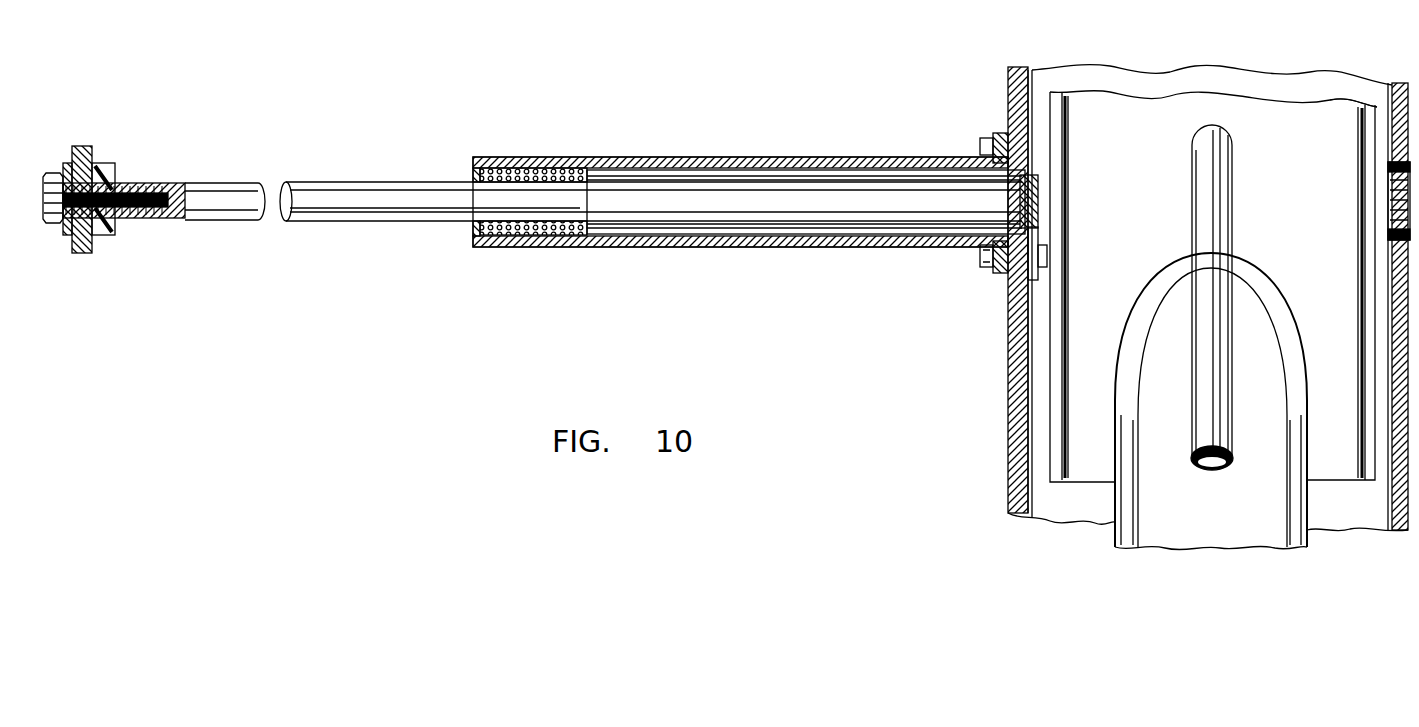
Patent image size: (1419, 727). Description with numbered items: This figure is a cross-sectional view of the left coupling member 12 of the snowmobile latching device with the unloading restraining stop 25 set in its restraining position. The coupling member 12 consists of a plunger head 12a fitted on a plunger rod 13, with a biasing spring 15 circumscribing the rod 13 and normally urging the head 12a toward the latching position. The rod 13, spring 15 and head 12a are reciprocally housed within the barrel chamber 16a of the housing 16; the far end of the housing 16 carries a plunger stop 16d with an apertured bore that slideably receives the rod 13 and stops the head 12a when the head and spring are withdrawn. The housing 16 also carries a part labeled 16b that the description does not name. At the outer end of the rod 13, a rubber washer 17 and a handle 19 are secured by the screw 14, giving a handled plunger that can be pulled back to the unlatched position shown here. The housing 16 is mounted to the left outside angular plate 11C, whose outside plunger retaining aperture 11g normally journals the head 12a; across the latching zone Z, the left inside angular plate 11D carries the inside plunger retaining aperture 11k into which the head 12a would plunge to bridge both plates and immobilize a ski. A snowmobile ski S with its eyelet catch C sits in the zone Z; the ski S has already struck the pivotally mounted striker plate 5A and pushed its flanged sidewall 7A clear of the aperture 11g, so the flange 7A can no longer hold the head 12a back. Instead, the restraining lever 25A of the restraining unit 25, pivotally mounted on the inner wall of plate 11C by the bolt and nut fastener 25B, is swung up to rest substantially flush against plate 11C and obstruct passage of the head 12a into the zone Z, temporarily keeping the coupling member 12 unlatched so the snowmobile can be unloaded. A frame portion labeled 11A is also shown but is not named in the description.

The fastener screw 14 is at (52, 223).
The handle 19 is at (82, 146).
The rubber washer 17 is at (100, 168).
The plunger rod 13 is at (248, 182).
The biasing spring 15 is at (521, 158).
The coupling member 12 is at (605, 157).
The housing 16 is at (667, 157).
The barrel chamber 16a is at (705, 247).
The plunger stop 16d is at (473, 225).
The tube flange 16b is at (1002, 135).
The plunger head 12a is at (798, 178).
The restraining lever 25A is at (1037, 212).
The unloading plunger restraining stop 25 is at (1040, 277).
The bolt and nut fastener 25B is at (980, 255).
The left outside angular plate 11C is at (1008, 487).
The outside plunger retaining aperture 11g is at (1027, 170).
The striker plate 5A is at (1163, 93).
The coupling zone Z is at (1250, 190).
The flanged sidewall 7A is at (1055, 388).
The left inside angular plate 11D is at (1383, 513).
The inside plunger retaining aperture 11k is at (1392, 183).
The catch C is at (1232, 138).
The snowmobile ski S is at (1213, 538).
The housing bottom portion 11A is at (1085, 507).